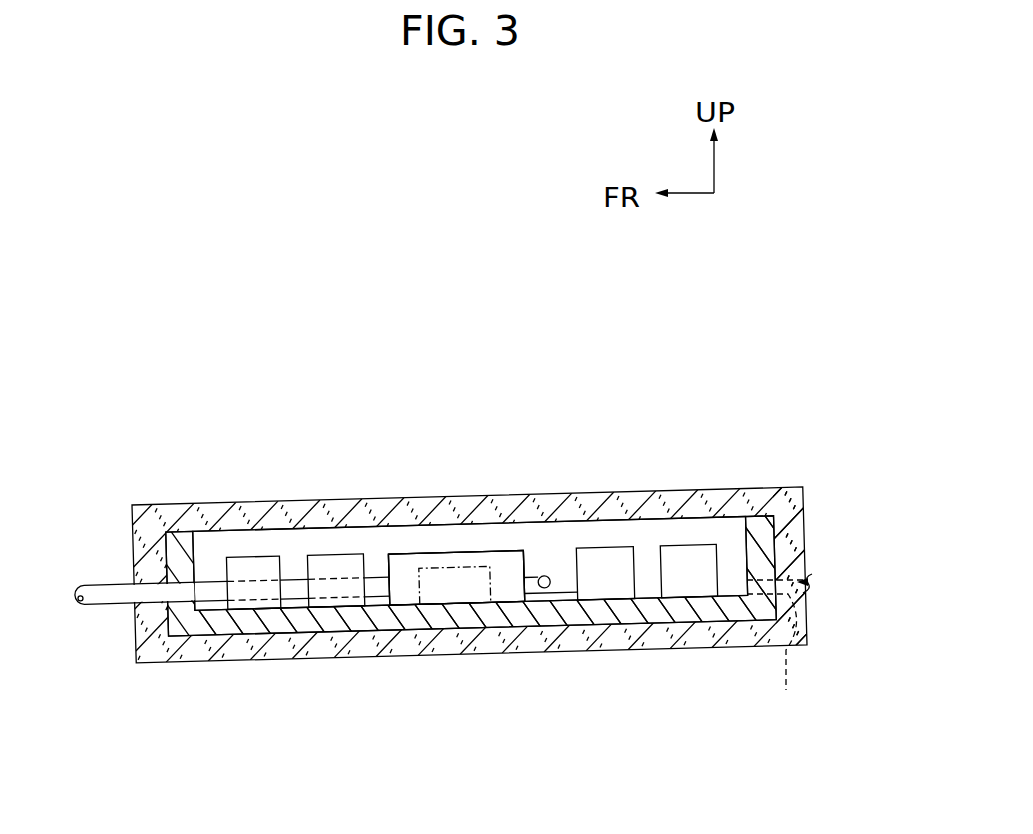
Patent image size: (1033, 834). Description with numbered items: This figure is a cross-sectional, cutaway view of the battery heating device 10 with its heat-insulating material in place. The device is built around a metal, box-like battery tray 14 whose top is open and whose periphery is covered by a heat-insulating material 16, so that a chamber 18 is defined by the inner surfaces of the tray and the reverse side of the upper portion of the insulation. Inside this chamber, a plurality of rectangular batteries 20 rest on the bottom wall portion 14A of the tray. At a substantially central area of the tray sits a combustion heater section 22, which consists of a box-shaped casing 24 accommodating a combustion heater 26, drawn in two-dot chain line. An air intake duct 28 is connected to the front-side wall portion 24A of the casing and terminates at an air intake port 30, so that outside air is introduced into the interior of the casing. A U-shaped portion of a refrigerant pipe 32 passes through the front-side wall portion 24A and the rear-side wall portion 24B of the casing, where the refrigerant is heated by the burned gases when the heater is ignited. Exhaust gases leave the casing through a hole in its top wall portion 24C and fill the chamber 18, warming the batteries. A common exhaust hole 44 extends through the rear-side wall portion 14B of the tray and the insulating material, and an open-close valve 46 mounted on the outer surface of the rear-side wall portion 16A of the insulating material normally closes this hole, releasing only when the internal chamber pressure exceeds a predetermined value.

The battery heating device 10 is at (736, 386).
The battery tray 14 is at (283, 640).
The bottom wall portion 14A is at (408, 612).
The rear-side wall portion 14B is at (757, 540).
The heat-insulating material 16 is at (552, 660).
The rear-side wall portion 16A is at (805, 512).
The chamber 18 is at (218, 543).
The batteries 20 is at (335, 555).
The combustion heater section 22 is at (465, 538).
The casing 24 is at (415, 540).
The front-side wall portion 24A is at (387, 562).
The rear-side wall portion 24B is at (527, 562).
The top wall portion 24C is at (503, 552).
The combustion heater 26 is at (460, 595).
The air intake duct 28 is at (208, 597).
The air intake port 30 is at (73, 603).
The refrigerant pipe 32 is at (548, 592).
The exhaust hole 44 is at (777, 650).
The open-close valve 46 is at (811, 578).